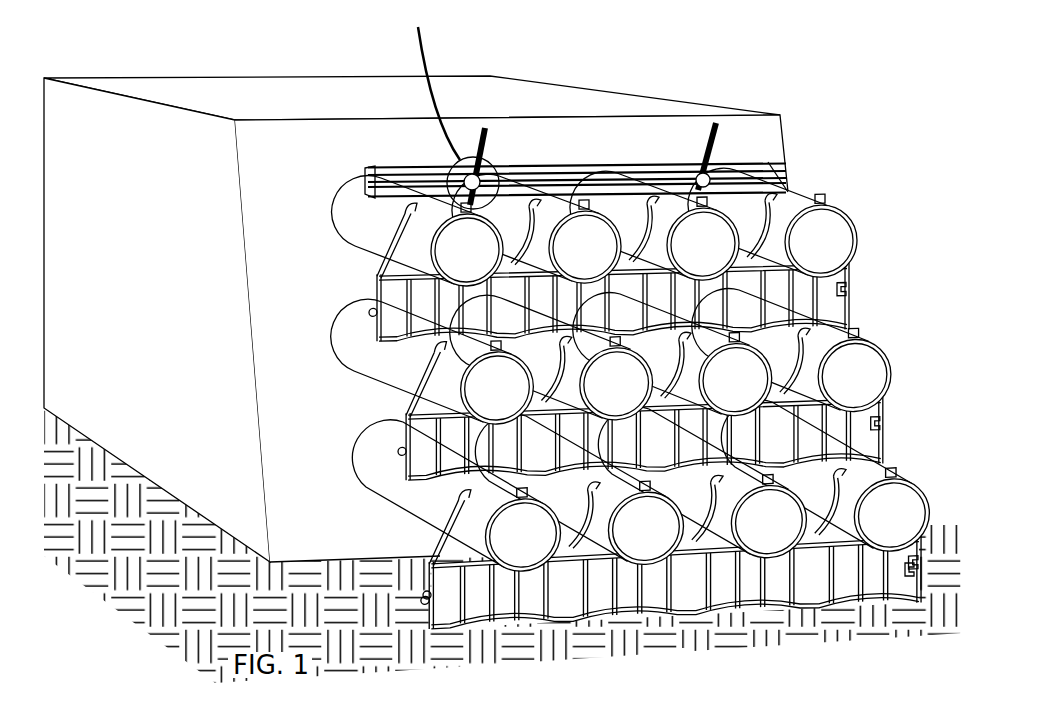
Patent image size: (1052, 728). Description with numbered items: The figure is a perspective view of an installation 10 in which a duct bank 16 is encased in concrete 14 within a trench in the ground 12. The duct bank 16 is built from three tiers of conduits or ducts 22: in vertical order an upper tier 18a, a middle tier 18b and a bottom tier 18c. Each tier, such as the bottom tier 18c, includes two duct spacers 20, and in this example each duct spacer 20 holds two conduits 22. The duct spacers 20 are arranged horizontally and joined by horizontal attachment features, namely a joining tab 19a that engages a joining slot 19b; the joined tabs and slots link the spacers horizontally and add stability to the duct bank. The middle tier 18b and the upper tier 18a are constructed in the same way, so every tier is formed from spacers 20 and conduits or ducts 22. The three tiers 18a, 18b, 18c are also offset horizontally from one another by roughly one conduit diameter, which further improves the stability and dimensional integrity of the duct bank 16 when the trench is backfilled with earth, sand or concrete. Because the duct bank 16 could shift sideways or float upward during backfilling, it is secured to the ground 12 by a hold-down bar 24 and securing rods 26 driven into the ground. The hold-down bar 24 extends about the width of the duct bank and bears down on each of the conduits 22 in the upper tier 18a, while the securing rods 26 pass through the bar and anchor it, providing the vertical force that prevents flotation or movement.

The installation 10 is at (503, 354).
The ground 12 is at (682, 670).
The concrete 14 is at (145, 323).
The duct bank 16 is at (614, 379).
The upper tier 18a is at (601, 254).
The middle tier 18b is at (610, 385).
The bottom tier 18c is at (647, 515).
The joining tab 19a is at (424, 592).
The joining slot 19b is at (912, 572).
The duct spacer 20 is at (383, 280).
The conduit or duct 22 is at (345, 357).
The hold-down bar 24 is at (372, 172).
The securing rod 26 is at (487, 150).